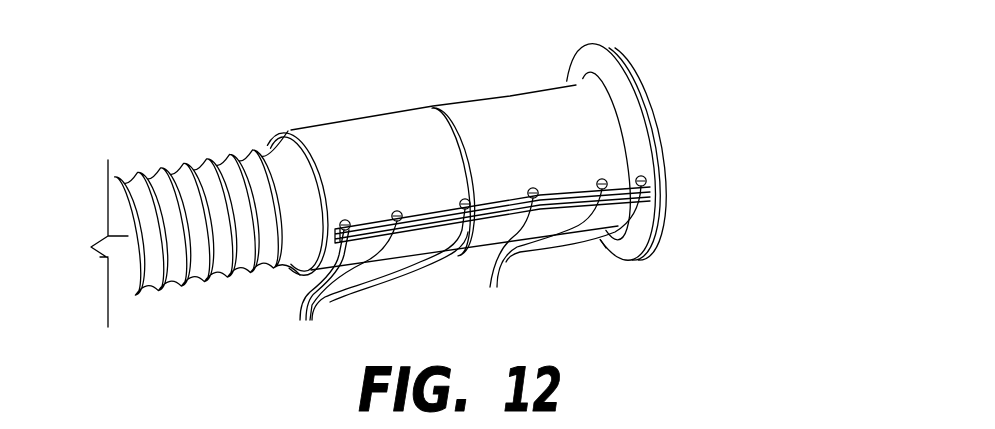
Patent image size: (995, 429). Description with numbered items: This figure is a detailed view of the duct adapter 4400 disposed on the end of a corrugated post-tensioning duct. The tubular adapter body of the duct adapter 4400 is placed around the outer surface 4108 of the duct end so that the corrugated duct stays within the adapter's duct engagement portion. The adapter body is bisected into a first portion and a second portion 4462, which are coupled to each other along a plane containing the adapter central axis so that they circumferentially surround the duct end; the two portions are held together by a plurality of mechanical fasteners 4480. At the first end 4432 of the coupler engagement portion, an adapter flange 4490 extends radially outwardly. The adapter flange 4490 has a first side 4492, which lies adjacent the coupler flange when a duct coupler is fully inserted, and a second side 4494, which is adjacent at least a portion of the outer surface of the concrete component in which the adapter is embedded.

The duct adapter 4400 is at (143, 173).
The outer surface 4108 is at (267, 235).
The first end 4432 is at (555, 66).
The second portion 4462 is at (667, 87).
The mechanical fasteners 4480 is at (467, 264).
The adapter flange 4490 is at (627, 162).
The first side 4492 is at (656, 144).
The second side 4494 is at (640, 244).